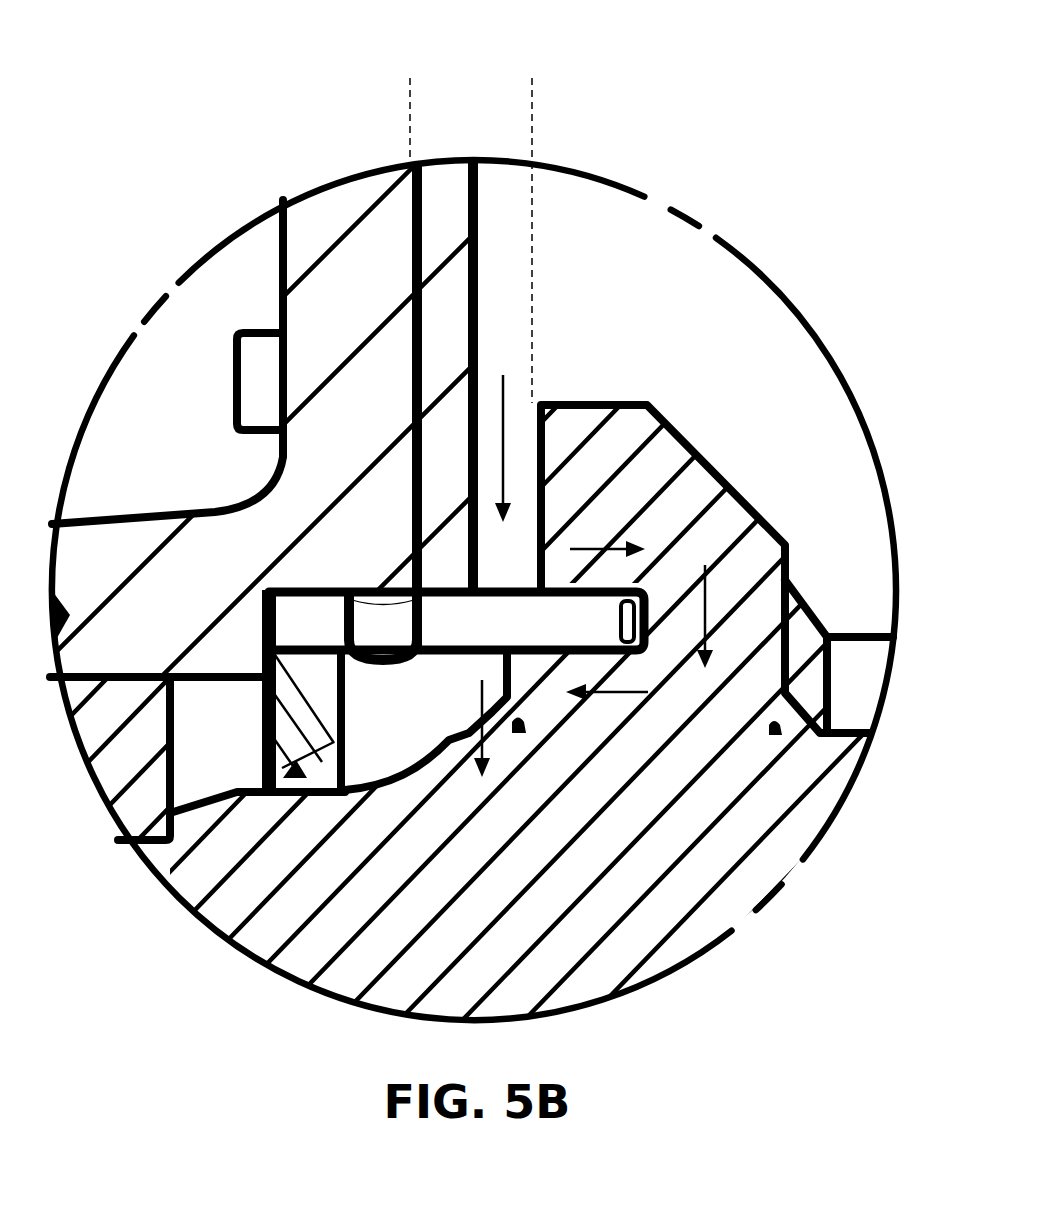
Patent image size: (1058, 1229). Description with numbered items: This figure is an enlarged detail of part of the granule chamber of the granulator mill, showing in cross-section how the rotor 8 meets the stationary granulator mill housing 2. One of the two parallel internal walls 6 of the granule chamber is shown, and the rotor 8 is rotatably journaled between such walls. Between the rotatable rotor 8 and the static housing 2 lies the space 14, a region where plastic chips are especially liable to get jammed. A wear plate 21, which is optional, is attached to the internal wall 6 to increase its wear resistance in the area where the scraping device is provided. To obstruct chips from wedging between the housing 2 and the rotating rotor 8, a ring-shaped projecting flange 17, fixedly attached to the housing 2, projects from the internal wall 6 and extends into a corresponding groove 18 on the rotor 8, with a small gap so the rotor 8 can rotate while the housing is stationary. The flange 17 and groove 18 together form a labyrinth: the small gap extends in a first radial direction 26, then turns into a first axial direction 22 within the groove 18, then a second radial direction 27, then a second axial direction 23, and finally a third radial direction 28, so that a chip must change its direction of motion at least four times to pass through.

The granulator mill housing 2 is at (199, 439).
The internal wall 6 is at (328, 272).
The rotor 8 is at (627, 753).
The space 14 is at (410, 82).
The projecting flange 17 is at (478, 640).
The groove 18 is at (790, 581).
The wear plate 21 is at (438, 215).
The first axial direction 22 is at (590, 543).
The second axial direction 23 is at (625, 702).
The first radial direction 26 is at (508, 440).
The second radial direction 27 is at (620, 620).
The third radial direction 28 is at (440, 710).